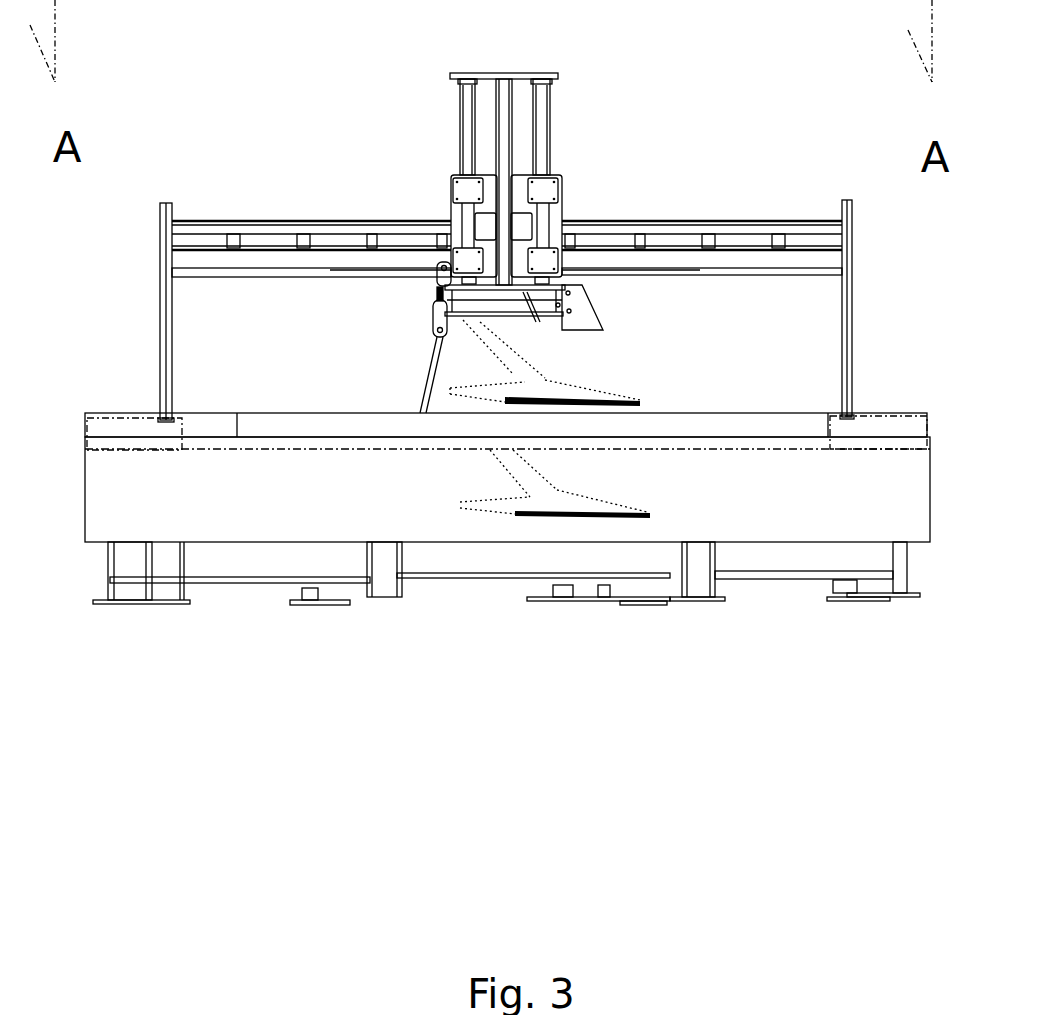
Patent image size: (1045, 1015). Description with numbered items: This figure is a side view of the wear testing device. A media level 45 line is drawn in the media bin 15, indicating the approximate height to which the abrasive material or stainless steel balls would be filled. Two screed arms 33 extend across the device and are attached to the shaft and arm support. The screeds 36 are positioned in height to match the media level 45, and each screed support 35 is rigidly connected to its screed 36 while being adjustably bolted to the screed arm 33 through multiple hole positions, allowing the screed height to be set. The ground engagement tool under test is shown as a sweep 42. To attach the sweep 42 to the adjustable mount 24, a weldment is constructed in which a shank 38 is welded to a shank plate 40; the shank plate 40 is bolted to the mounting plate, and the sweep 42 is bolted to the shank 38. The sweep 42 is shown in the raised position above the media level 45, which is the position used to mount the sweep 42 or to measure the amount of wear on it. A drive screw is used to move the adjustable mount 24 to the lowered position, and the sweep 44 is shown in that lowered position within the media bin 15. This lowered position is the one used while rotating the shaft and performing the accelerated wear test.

The media bin 15 is at (128, 520).
The adjustable mount 24 is at (470, 68).
The screed arms 33 is at (212, 220).
The screed support 35 is at (183, 349).
The screeds 36 is at (115, 428).
The shank 38 is at (460, 342).
The shank plate 40 is at (530, 323).
The sweep 42 is at (565, 384).
The sweep 44 is at (567, 525).
The media level 45 is at (226, 468).